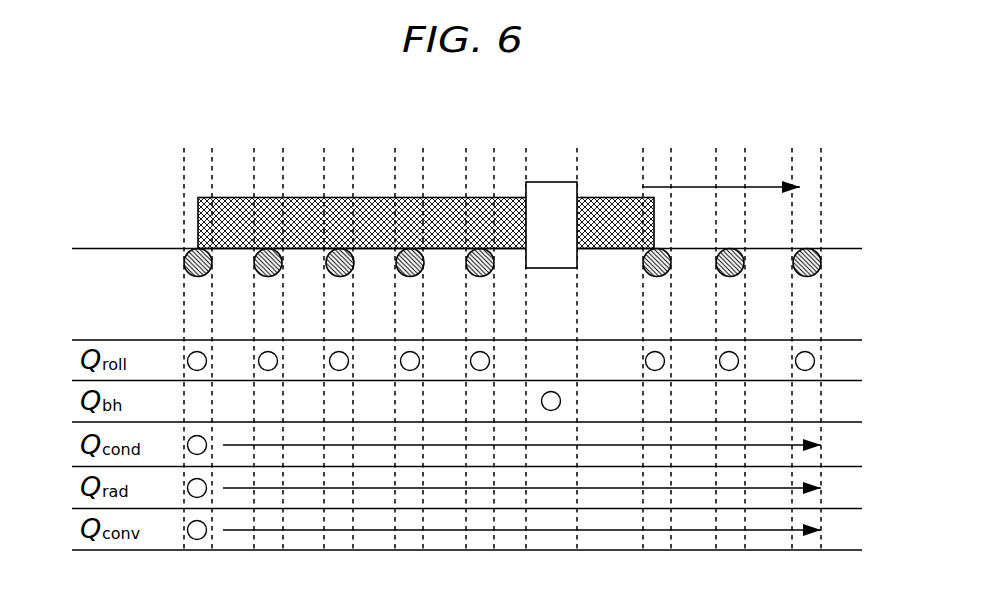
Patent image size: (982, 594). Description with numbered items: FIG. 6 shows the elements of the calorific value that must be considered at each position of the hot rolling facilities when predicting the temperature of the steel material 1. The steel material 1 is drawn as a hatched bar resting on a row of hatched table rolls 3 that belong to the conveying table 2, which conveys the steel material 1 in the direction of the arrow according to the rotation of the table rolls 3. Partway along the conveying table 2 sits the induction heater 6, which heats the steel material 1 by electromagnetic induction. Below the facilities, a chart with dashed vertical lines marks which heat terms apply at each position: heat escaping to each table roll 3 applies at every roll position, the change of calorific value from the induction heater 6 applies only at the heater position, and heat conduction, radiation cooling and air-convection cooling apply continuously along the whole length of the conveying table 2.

The steel material 1 is at (439, 197).
The conveying table 2 is at (838, 248).
The table roll 3 is at (807, 276).
The induction heater 6 is at (552, 182).